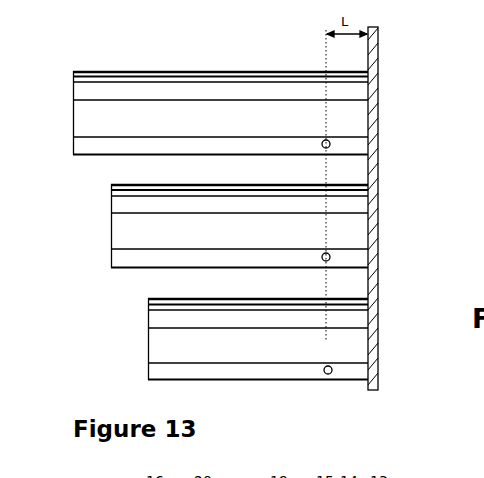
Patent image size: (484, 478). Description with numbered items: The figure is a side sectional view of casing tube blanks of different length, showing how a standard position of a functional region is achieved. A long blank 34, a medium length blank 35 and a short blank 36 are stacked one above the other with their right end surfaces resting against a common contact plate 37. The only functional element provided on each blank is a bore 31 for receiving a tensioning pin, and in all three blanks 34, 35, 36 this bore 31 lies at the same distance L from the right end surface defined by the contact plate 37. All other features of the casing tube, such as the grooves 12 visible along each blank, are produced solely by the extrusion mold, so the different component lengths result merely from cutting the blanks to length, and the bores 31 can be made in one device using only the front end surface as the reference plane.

The grooves 12 is at (225, 225).
The bore 31 is at (330, 144).
The long blank 34 is at (356, 111).
The medium length blank 35 is at (357, 225).
The short blank 36 is at (355, 340).
The contact plate 37 is at (378, 385).